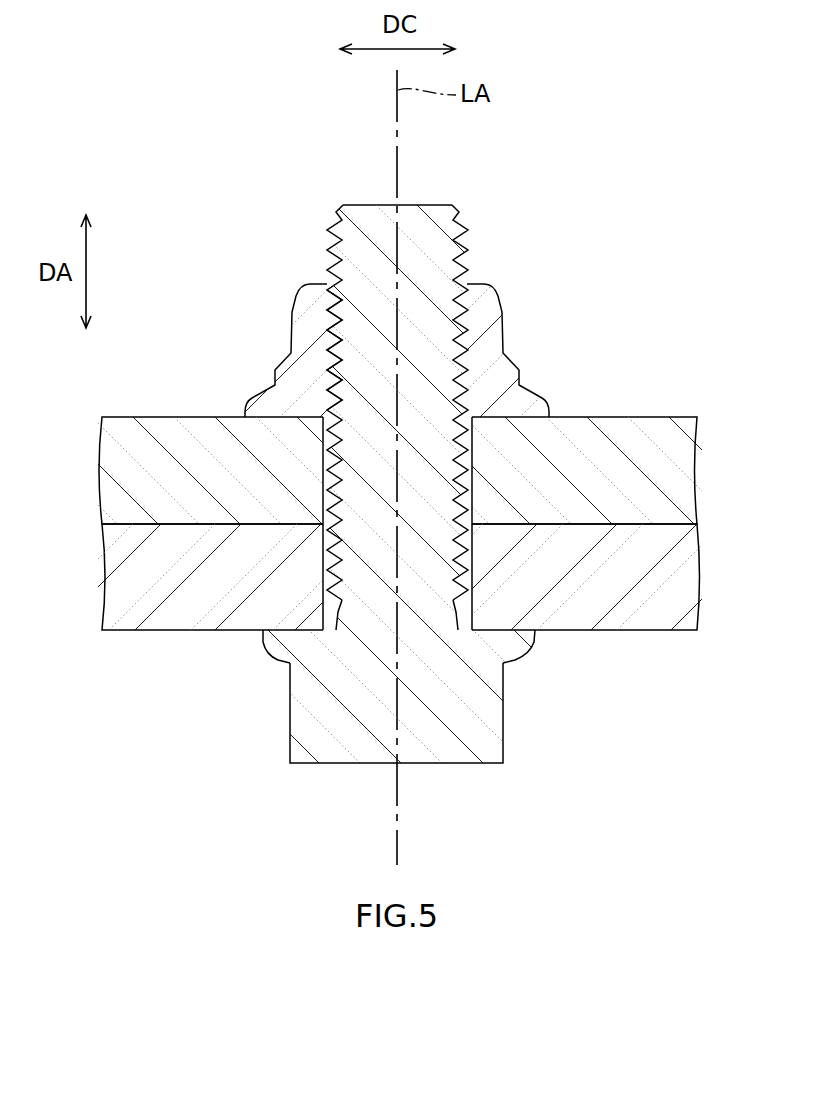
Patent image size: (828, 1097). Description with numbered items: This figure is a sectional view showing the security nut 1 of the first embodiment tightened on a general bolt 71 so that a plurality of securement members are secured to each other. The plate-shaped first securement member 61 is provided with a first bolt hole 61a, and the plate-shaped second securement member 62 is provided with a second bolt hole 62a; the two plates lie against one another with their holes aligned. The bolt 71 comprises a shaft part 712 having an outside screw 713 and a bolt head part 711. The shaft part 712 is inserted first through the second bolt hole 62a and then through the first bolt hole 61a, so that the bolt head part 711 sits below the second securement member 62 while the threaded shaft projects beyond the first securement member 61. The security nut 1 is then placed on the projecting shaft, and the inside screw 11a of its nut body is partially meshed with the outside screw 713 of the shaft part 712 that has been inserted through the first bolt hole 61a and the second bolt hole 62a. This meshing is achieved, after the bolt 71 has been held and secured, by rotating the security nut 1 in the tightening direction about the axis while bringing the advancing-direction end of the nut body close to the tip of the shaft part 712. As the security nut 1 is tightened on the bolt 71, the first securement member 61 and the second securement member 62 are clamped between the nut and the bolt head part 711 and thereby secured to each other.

The security nut 1 is at (386, 310).
The inside screw 11a is at (328, 345).
The first securement member 61 is at (393, 426).
The first bolt hole 61a is at (464, 420).
The second securement member 62 is at (402, 629).
The second bolt hole 62a is at (462, 616).
The bolt 71 is at (414, 516).
The bolt head part 711 is at (348, 747).
The shaft part 712 is at (357, 570).
The outside screw 713 is at (338, 537).